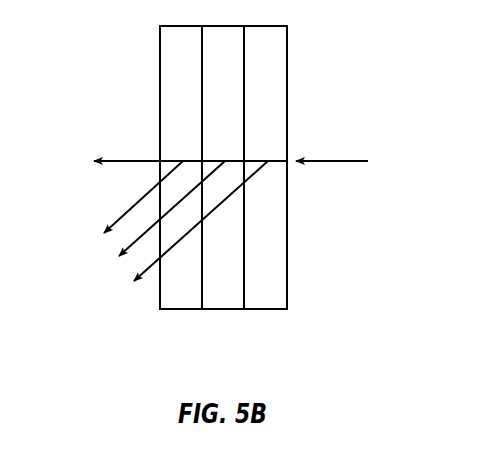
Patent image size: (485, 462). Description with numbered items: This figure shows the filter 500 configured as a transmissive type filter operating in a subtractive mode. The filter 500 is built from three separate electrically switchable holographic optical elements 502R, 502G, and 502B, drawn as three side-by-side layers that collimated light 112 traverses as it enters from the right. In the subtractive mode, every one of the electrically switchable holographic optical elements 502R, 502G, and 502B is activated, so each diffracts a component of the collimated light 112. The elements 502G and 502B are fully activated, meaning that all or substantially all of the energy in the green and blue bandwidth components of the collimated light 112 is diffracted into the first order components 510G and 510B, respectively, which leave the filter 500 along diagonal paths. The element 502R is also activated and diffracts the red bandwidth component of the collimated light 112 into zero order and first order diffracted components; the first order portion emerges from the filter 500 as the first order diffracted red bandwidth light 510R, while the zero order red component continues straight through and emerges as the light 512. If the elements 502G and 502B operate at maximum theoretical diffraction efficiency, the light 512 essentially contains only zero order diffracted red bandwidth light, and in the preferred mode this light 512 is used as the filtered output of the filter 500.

The filter 500 is at (336, 65).
The electrically switchable holographic optical element 502R is at (180, 310).
The electrically switchable holographic optical element 502G is at (225, 311).
The electrically switchable holographic optical element 502B is at (263, 311).
The collimated light 112 is at (320, 157).
The light 512 is at (138, 160).
The first order diffracted red bandwidth light 510R is at (105, 224).
The first order components 510G is at (117, 252).
The first order components 510B is at (138, 278).